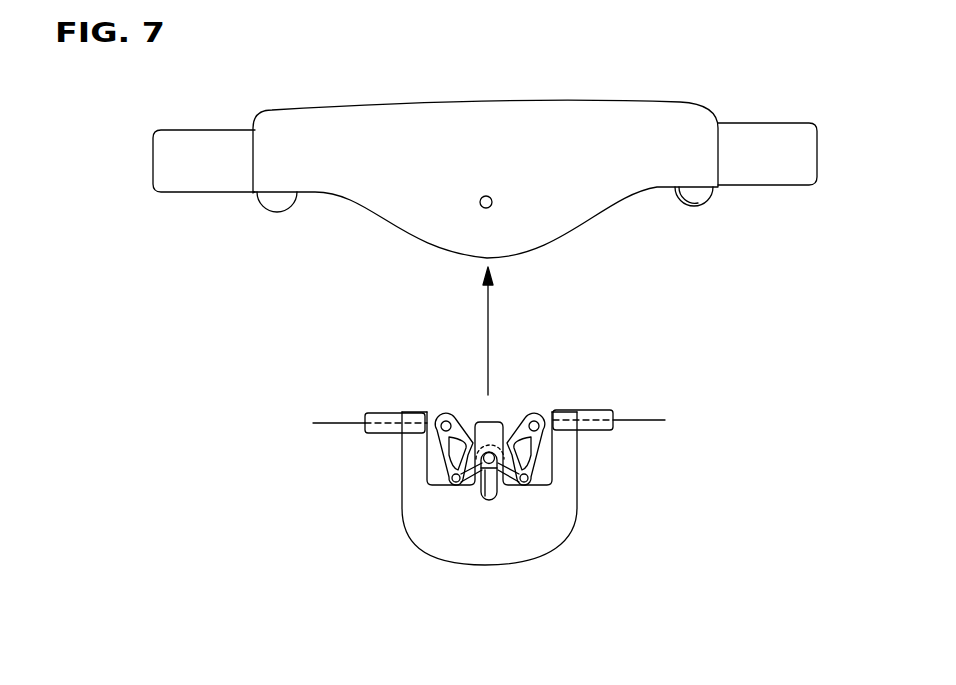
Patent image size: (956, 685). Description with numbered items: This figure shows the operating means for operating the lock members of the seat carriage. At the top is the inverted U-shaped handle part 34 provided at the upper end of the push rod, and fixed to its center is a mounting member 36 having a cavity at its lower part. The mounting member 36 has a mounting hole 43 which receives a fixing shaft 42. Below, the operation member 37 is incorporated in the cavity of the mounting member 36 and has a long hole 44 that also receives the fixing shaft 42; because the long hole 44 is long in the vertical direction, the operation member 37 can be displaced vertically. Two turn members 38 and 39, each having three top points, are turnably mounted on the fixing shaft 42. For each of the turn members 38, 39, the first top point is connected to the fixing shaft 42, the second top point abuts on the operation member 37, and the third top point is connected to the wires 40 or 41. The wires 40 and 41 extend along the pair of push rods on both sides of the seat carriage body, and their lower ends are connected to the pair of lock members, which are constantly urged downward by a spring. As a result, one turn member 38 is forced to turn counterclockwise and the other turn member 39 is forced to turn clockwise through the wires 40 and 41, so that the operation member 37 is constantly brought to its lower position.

The handle part 34 is at (776, 140).
The mounting member 36 is at (569, 117).
The operation member 37 is at (557, 525).
The turn member 38 is at (440, 438).
The turn member 39 is at (545, 437).
The wire 40 is at (332, 420).
The wire 41 is at (647, 417).
The fixing shaft 42 is at (488, 500).
The mounting hole 43 is at (492, 204).
The long hole 44 is at (497, 488).